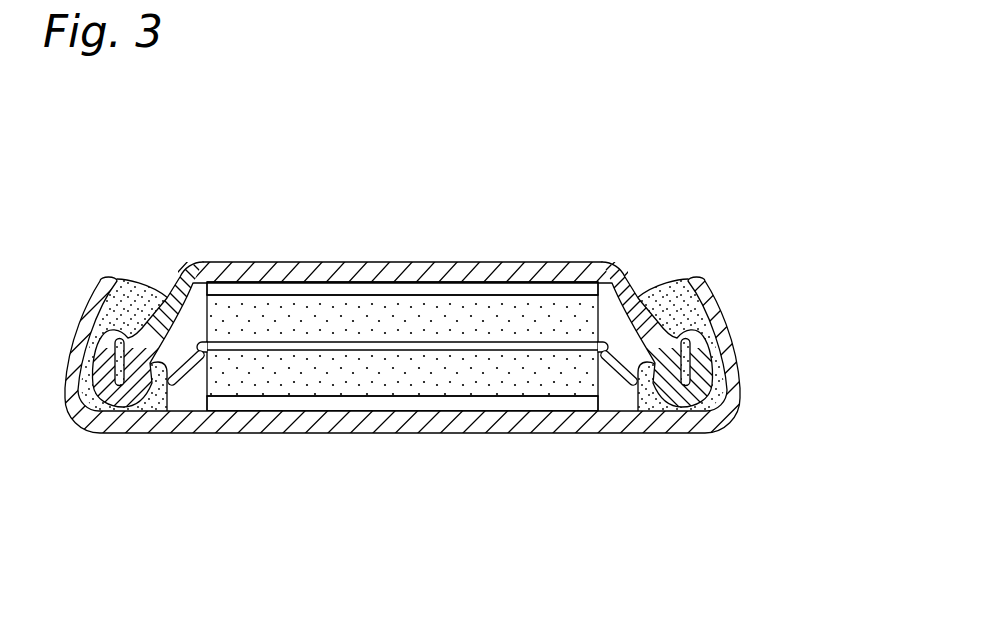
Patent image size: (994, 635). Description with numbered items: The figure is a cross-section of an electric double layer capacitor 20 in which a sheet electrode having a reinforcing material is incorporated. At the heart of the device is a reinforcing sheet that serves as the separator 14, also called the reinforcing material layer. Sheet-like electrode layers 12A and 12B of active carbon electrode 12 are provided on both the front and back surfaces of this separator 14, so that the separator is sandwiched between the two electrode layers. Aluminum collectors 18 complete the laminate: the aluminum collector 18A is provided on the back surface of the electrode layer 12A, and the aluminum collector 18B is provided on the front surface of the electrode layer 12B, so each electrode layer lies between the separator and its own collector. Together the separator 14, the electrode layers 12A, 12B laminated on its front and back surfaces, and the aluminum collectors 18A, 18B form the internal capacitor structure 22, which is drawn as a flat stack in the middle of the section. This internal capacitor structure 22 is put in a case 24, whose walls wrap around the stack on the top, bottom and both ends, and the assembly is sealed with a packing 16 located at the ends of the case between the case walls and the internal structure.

The active carbon electrode 12 is at (540, 322).
The electrode layer 12A is at (432, 370).
The electrode layer 12B is at (455, 325).
The separator 14 is at (471, 343).
The packing 16 is at (673, 287).
The aluminum collector 18 is at (323, 290).
The aluminum collector 18A is at (345, 403).
The aluminum collector 18B is at (373, 290).
The electric double layer capacitor 20 is at (512, 200).
The internal capacitor structure 22 is at (563, 502).
The case 24 is at (205, 423).